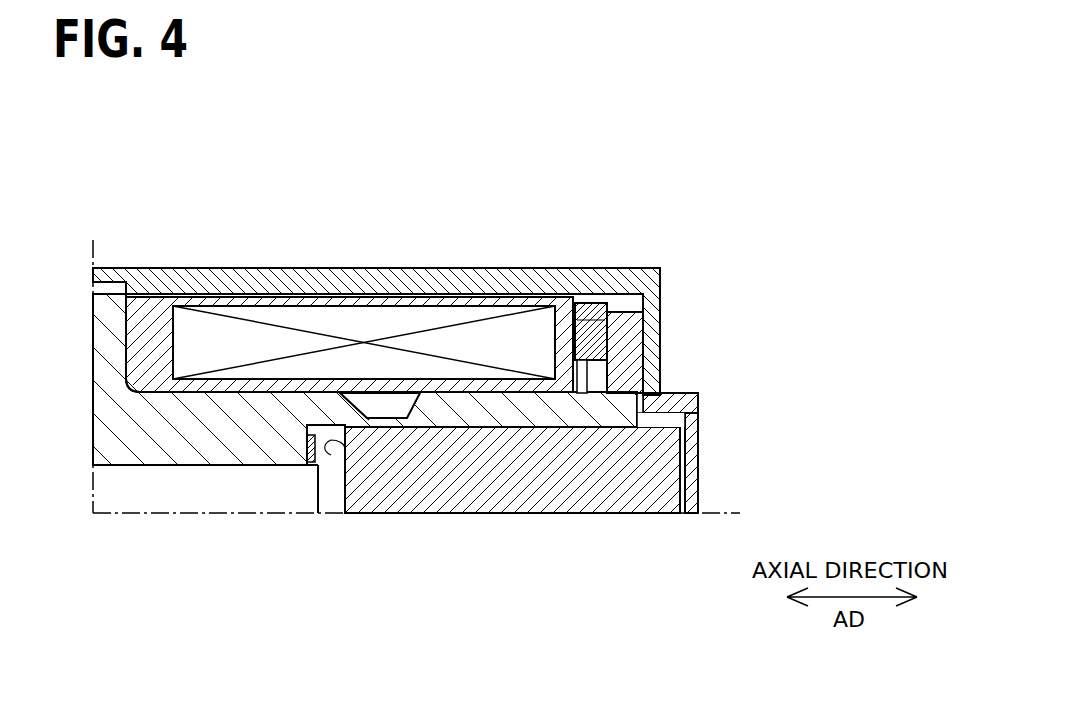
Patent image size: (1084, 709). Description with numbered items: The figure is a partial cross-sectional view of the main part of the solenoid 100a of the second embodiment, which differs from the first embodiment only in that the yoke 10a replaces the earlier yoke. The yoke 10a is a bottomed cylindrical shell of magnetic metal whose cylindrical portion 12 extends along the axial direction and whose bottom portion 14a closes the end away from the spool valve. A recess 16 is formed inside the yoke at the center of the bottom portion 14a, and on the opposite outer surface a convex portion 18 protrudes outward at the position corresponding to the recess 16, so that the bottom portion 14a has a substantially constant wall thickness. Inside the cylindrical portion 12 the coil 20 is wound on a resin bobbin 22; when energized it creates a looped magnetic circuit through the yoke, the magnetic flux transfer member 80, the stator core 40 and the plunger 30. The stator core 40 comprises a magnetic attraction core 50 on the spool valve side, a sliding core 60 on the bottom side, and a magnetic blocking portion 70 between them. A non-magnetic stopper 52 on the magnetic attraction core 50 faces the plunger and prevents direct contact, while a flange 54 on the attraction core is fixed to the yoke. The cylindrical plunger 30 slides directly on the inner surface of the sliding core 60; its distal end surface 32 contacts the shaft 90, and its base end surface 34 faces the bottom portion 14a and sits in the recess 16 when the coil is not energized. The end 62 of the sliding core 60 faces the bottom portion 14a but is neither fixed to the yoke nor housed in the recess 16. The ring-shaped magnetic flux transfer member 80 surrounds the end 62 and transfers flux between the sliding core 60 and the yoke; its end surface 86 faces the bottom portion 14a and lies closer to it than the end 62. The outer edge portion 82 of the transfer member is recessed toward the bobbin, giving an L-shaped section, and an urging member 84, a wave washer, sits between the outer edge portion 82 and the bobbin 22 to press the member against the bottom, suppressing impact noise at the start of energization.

The solenoid 100a is at (797, 185).
The yoke 10a is at (694, 262).
The cylindrical portion 12 is at (171, 280).
The bottom portion 14a is at (700, 395).
The recess 16 is at (672, 472).
The convex portion 18 is at (698, 430).
The coil 20 is at (233, 347).
The resin bobbin 22 is at (563, 295).
The plunger 30 is at (481, 490).
The distal end surface 32 is at (318, 467).
The base end surface 34 is at (683, 495).
The stator core 40 is at (523, 207).
The magnetic attraction core 50 is at (285, 437).
The stopper 52 is at (320, 468).
The flange 54 is at (103, 292).
The sliding core 60 is at (490, 413).
The end 62 is at (637, 403).
The magnetic blocking portion 70 is at (388, 412).
The magnetic flux transfer member 80 is at (637, 343).
The outer edge portion 82 is at (604, 305).
The urging member 84 is at (597, 333).
The end surface 86 is at (655, 360).
The shaft 90 is at (141, 483).